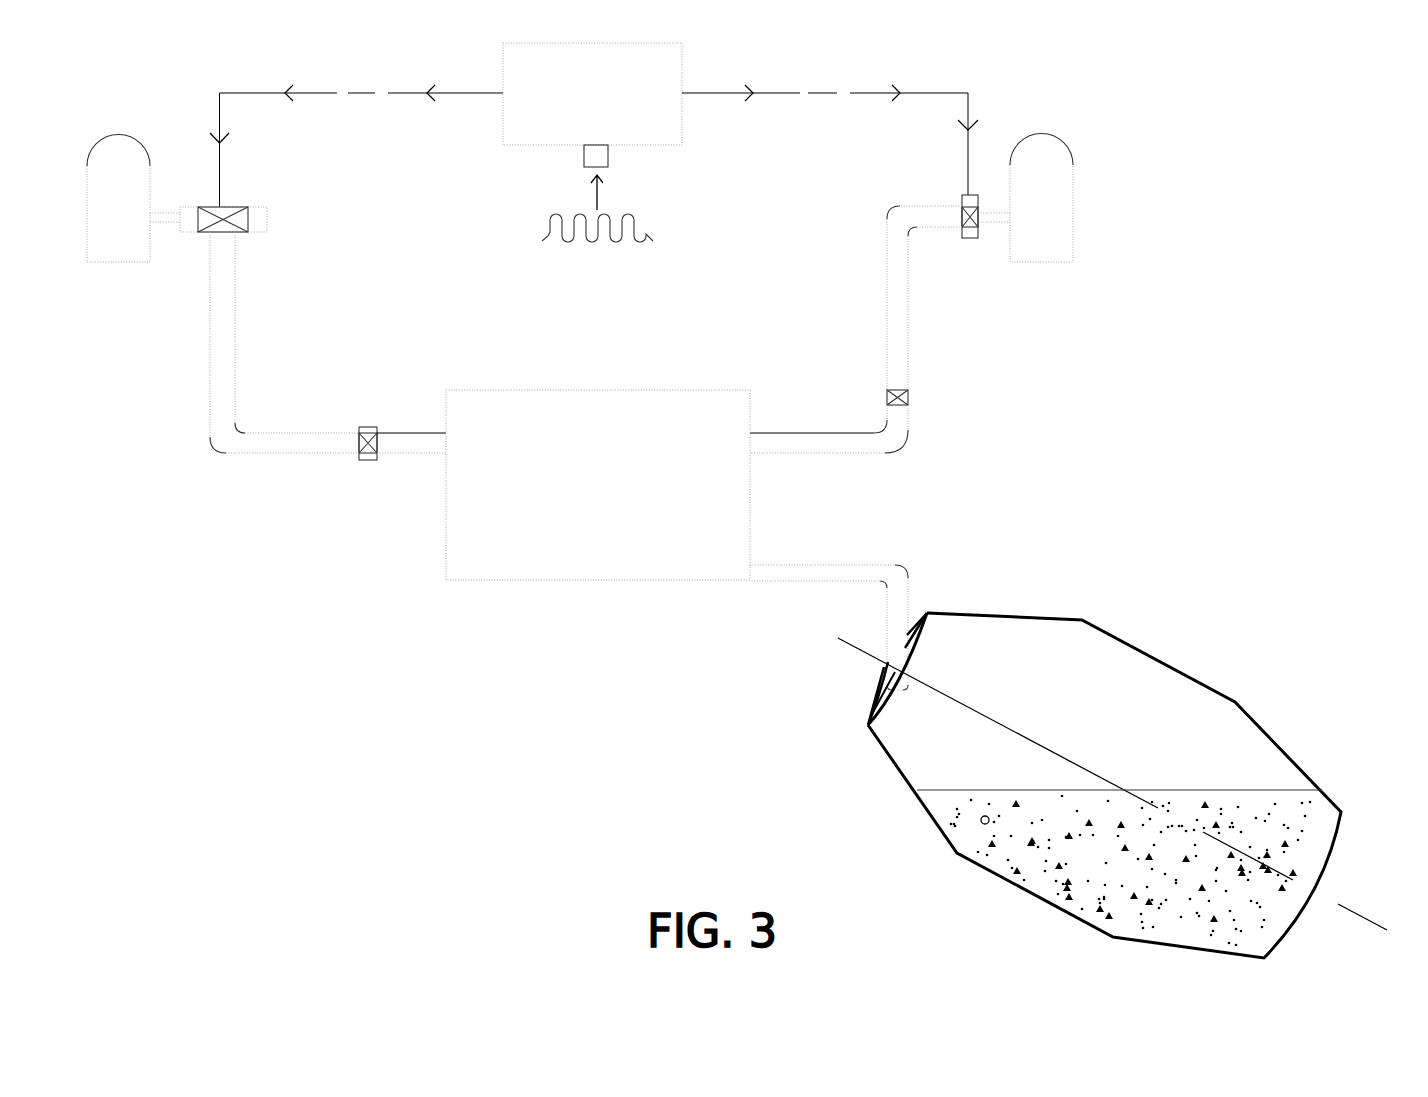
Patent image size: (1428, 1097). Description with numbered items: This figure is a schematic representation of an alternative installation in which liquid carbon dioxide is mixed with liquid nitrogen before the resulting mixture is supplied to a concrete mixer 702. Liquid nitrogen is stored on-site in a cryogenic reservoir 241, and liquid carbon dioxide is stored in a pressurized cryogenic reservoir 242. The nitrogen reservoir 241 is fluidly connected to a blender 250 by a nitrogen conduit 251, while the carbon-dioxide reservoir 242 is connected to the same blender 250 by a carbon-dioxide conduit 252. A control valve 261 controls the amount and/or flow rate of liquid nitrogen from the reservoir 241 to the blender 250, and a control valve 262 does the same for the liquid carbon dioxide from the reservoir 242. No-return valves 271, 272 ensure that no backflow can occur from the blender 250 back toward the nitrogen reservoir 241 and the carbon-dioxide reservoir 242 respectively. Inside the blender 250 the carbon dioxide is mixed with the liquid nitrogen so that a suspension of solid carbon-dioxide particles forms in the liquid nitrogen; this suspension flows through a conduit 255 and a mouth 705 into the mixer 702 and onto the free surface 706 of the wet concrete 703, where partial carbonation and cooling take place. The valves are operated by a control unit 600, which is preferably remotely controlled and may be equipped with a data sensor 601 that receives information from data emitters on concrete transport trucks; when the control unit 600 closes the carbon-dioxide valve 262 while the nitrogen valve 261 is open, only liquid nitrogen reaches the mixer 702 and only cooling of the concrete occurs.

The cryogenic reservoir 241 is at (133, 198).
The pressurized cryogenic reservoir 242 is at (1025, 198).
The control valve 261 is at (267, 217).
The control valve 262 is at (975, 238).
The control unit 600 is at (594, 125).
The data sensor 601 is at (617, 165).
The blender 250 is at (598, 485).
The nitrogen conduit 251 is at (312, 423).
The carbon-dioxide conduit 252 is at (880, 314).
The conduit 255 is at (852, 558).
The no-return valve 271 is at (381, 474).
The no-return valve 272 is at (916, 406).
The concrete mixer 702 is at (1283, 733).
The wet concrete 703 is at (980, 820).
The mouth 705 is at (858, 712).
The free surface 706 is at (1197, 787).